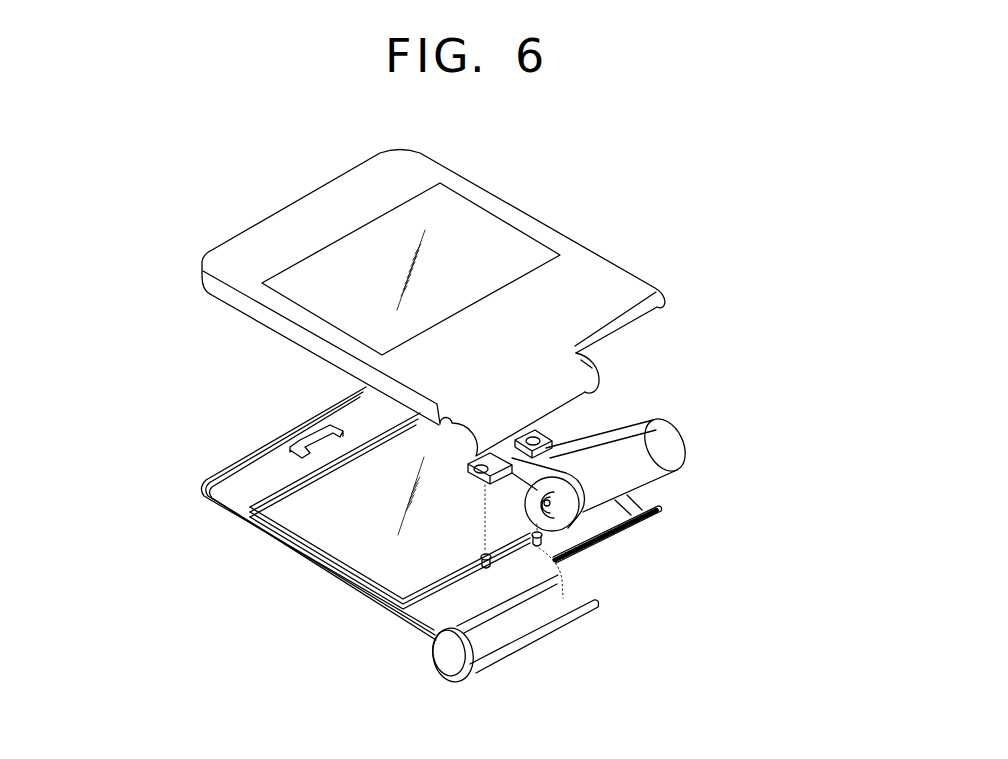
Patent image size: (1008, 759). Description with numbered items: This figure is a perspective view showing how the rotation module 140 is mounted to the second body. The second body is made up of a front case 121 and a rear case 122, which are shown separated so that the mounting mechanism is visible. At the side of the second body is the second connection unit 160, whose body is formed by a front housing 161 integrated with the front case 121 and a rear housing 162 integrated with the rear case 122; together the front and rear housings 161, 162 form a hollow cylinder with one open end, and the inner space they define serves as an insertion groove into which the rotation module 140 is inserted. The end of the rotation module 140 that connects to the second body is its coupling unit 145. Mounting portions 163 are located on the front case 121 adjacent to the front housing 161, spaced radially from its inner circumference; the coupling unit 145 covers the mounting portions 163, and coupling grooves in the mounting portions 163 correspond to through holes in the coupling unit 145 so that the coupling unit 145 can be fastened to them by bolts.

The front case 121 is at (380, 613).
The rear case 122 is at (586, 265).
The rotation module 140 is at (676, 479).
The coupling unit 145 is at (520, 432).
The second connection unit 160 is at (567, 645).
The front housing 161 is at (498, 660).
The rear housing 162 is at (583, 367).
The mounting portions 163 is at (563, 566).